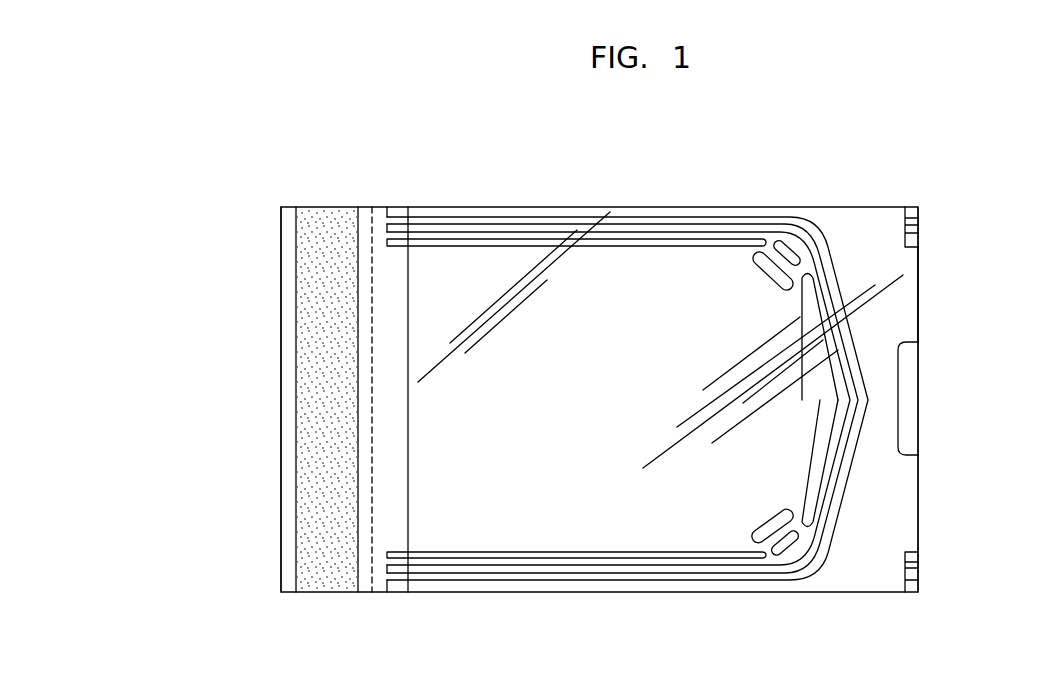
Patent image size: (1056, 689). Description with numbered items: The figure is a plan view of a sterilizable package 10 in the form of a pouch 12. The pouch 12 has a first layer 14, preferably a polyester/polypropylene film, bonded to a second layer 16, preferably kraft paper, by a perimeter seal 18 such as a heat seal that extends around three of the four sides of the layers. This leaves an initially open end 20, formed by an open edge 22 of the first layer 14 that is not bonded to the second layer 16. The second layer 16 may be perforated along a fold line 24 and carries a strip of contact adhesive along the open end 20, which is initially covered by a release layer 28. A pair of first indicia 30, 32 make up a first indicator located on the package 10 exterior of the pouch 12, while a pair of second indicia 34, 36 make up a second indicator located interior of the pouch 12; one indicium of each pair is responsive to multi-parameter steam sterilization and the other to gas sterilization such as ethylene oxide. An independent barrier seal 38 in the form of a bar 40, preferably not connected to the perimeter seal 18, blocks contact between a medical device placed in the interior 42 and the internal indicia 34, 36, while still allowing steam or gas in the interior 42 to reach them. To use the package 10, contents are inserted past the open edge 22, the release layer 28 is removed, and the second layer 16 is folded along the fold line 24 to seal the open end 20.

The sterilizable package 10 is at (786, 142).
The pouch 12 is at (944, 181).
The first layer 14 is at (921, 306).
The second layer 16 is at (920, 386).
The perimeter seal 18 is at (706, 574).
The open end 20 is at (264, 488).
The open edge 22 is at (408, 503).
The fold line 24 is at (373, 301).
The release layer 28 is at (335, 206).
The first indicium 30 is at (935, 226).
The first indicium 32 is at (935, 578).
The second indicium 34 is at (818, 230).
The second indicium 36 is at (796, 550).
The barrier seal 38 is at (750, 275).
The bar 40 is at (774, 282).
The interior 42 is at (575, 422).